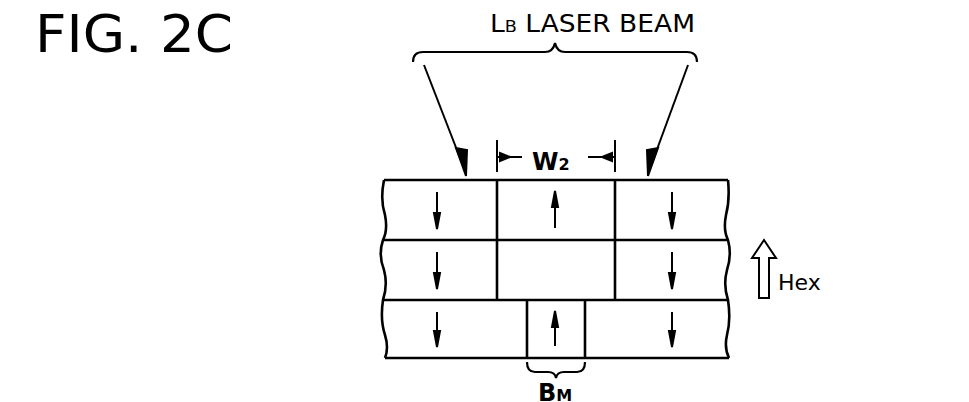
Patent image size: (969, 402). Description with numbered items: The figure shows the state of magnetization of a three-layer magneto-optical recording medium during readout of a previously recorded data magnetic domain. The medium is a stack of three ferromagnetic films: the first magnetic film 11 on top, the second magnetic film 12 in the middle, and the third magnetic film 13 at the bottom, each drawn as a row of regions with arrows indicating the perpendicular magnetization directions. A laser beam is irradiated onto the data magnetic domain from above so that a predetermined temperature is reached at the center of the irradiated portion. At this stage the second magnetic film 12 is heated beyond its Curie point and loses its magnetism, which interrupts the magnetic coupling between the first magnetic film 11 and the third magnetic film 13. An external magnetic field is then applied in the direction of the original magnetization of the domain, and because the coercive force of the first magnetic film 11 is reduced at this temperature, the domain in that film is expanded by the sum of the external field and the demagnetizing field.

The first magnetic film 11 is at (720, 208).
The second magnetic film 12 is at (720, 268).
The third magnetic film 13 is at (720, 342).